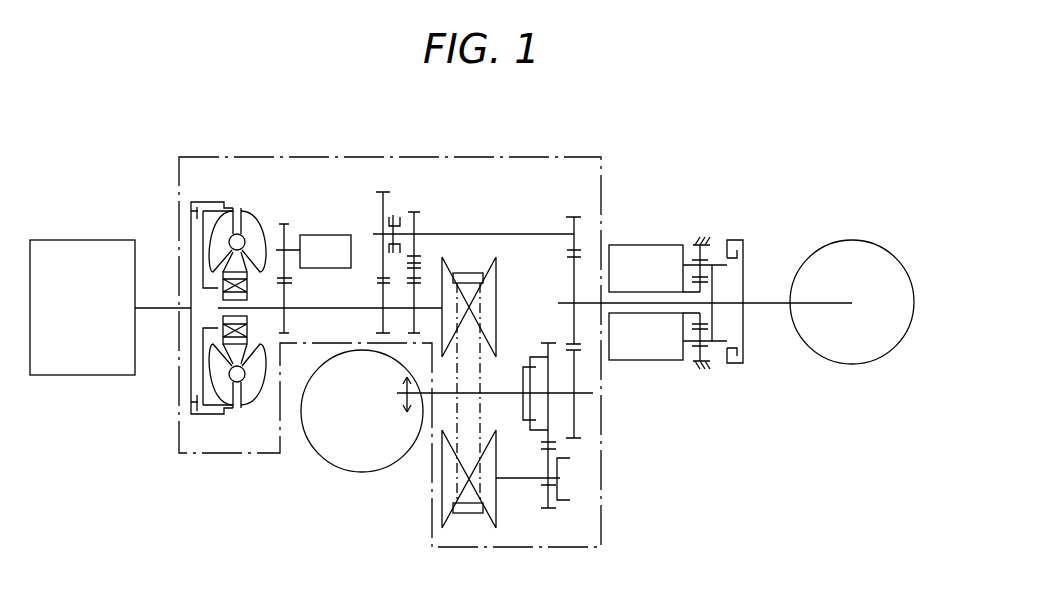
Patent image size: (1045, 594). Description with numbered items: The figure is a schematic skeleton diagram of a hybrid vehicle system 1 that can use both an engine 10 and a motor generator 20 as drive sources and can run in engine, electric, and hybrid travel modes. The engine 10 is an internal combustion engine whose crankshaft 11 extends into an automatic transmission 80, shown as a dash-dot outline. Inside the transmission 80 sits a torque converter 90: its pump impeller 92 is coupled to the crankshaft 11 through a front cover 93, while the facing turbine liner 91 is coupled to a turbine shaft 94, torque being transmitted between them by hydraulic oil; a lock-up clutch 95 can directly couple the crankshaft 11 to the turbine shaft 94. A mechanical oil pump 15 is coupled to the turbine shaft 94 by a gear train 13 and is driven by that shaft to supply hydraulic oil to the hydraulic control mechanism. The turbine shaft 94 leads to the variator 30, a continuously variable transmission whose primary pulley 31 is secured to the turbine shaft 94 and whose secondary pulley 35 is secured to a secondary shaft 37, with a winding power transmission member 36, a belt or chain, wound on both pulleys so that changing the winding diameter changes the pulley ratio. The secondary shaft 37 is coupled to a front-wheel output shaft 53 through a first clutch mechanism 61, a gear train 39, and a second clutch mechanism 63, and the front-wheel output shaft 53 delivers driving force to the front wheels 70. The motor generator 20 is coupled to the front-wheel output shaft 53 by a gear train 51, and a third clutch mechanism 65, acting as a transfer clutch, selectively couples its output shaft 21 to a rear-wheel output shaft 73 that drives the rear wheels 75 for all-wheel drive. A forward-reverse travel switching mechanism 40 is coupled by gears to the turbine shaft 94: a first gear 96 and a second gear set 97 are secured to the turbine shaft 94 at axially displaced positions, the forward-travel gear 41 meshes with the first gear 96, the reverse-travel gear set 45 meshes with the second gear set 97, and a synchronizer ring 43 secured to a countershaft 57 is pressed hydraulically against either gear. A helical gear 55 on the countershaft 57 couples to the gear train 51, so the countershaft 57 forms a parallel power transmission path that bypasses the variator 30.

The hybrid vehicle system 1 is at (700, 479).
The engine 10 is at (86, 240).
The crankshaft 11 is at (153, 308).
The gear train 13 is at (284, 220).
The mechanical oil pump 15 is at (323, 235).
The motor generator 20 is at (644, 245).
The output shaft 21 is at (599, 302).
The variator 30 is at (503, 278).
The primary pulley 31 is at (494, 320).
The secondary pulley 35 is at (442, 520).
The winding power transmission member 36 is at (475, 392).
The secondary shaft 37 is at (513, 480).
The gear train 39 is at (543, 522).
The forward-reverse travel switching mechanism 40 is at (384, 228).
The forward-travel gear 41 is at (382, 190).
The synchronizer ring 43 is at (394, 211).
The reverse-travel gear set 45 is at (415, 209).
The gear train 51 is at (587, 354).
The front-wheel output shaft 53 is at (497, 395).
The helical gear 55 is at (574, 216).
The countershaft 57 is at (482, 234).
The first clutch mechanism 61 is at (580, 488).
The second clutch mechanism 63 is at (531, 348).
The third clutch mechanism 65 is at (733, 234).
The front wheels 70 is at (351, 472).
The rear-wheel output shaft 73 is at (770, 303).
The rear wheels 75 is at (853, 365).
The automatic transmission 80 is at (545, 157).
The torque converter 90 is at (206, 288).
The turbine liner 91 is at (222, 398).
The pump impeller 92 is at (258, 392).
The front cover 93 is at (192, 386).
The turbine shaft 94 is at (308, 306).
The lock-up clutch 95 is at (197, 210).
The first gear 96 is at (381, 315).
The second gear set 97 is at (412, 300).